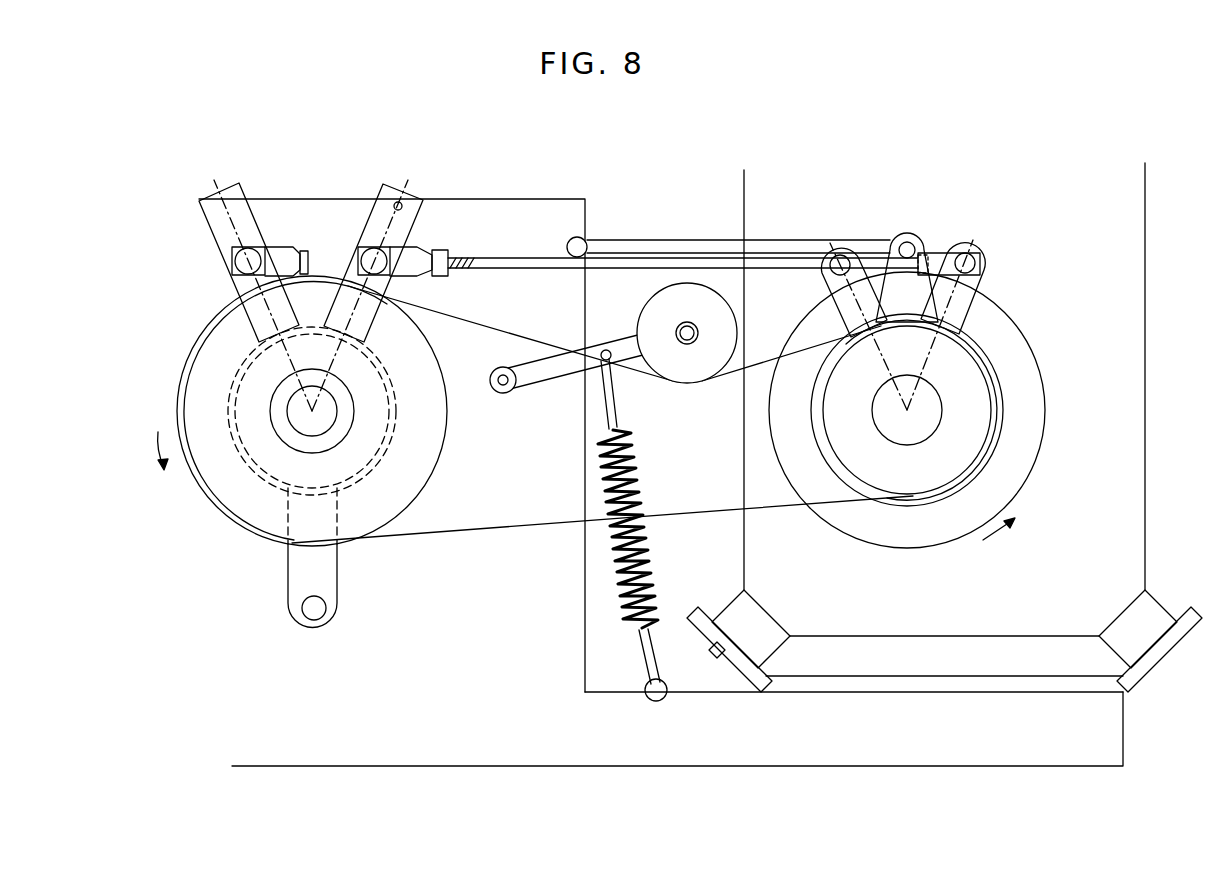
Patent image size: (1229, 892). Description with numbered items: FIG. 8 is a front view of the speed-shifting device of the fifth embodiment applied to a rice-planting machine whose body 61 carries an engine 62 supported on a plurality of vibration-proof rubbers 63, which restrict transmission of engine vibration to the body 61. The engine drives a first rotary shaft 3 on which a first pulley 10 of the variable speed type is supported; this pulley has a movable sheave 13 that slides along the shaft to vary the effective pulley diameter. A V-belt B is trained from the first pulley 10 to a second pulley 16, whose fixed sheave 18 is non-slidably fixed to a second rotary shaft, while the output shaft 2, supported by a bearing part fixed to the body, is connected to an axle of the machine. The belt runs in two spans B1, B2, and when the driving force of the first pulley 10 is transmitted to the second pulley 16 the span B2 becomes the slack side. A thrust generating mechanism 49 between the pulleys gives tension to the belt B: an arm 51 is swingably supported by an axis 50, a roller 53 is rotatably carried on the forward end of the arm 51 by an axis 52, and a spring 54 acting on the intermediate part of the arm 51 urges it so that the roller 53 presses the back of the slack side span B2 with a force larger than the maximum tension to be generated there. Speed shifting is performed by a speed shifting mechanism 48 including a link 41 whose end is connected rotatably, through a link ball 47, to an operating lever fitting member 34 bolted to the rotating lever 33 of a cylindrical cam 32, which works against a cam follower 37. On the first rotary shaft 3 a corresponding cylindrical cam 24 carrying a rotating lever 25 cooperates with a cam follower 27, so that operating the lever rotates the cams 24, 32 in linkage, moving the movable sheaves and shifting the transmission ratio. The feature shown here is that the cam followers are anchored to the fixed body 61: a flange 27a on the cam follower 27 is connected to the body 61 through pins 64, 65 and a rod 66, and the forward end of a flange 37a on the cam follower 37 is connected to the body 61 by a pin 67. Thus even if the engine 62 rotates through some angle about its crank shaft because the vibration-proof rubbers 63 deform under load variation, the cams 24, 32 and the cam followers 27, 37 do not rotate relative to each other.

The output shaft 2 is at (268, 425).
The first rotary shaft 3 is at (890, 432).
The first pulley 10 is at (1039, 357).
The movable sheave 13 is at (1026, 487).
The second pulley 16 is at (223, 516).
The fixed sheave 18 is at (195, 483).
The cylindrical cam 24 is at (1003, 426).
The rotating lever 25 is at (838, 245).
The cam follower 27 is at (935, 492).
The flange 27a is at (921, 252).
The cylindrical cam 32 is at (228, 386).
The rotating lever 33 is at (232, 262).
The operating lever fitting member 34 is at (239, 186).
The cam follower 37 is at (378, 452).
The flange 37a is at (291, 587).
The link 41 is at (634, 240).
The link ball 47 is at (265, 247).
The speed shifting mechanism 48 is at (517, 232).
The thrust generating mechanism 49 is at (566, 435).
The axis 50 is at (503, 392).
The arm 51 is at (605, 350).
The axis 52 is at (681, 346).
The roller 53 is at (725, 375).
The spring 54 is at (650, 548).
The body 61 is at (232, 766).
The engine 62 is at (1147, 335).
The vibration-proof rubbers 63 is at (728, 604).
The pin 64 is at (907, 233).
The pin 65 is at (580, 238).
The rod 66 is at (710, 240).
The pin 67 is at (314, 622).
The V-belt B is at (478, 530).
The belt lower run B1 is at (550, 528).
The span B2 is at (500, 326).